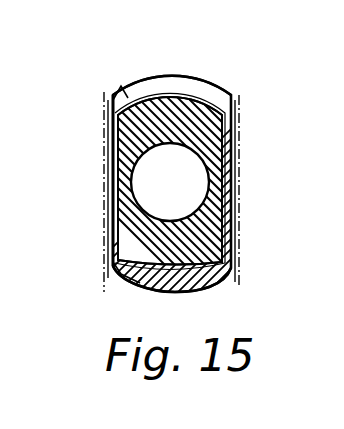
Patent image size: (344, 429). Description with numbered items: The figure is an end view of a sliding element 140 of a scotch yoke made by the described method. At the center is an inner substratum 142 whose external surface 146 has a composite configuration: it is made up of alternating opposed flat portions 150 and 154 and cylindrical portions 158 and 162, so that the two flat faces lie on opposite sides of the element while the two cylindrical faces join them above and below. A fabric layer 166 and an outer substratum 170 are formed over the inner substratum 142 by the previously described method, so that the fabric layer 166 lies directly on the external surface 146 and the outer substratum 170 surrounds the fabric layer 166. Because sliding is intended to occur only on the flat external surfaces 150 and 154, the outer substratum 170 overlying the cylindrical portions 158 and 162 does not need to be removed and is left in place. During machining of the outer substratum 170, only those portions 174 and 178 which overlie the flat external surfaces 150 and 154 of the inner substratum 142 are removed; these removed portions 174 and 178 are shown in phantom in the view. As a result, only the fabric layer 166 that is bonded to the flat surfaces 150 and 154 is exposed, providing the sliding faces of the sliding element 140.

The sliding element 140 is at (237, 78).
The inner substratum 142 is at (200, 138).
The external surface 146 is at (110, 117).
The flat portion 150 is at (106, 162).
The flat portion 154 is at (202, 207).
The cylindrical portion 158 is at (178, 85).
The cylindrical portion 162 is at (113, 268).
The fabric layer 166 is at (127, 97).
The outer substratum 170 is at (187, 287).
The removed portion of outer substratum 174 is at (106, 190).
The removed portion of outer substratum 178 is at (242, 145).